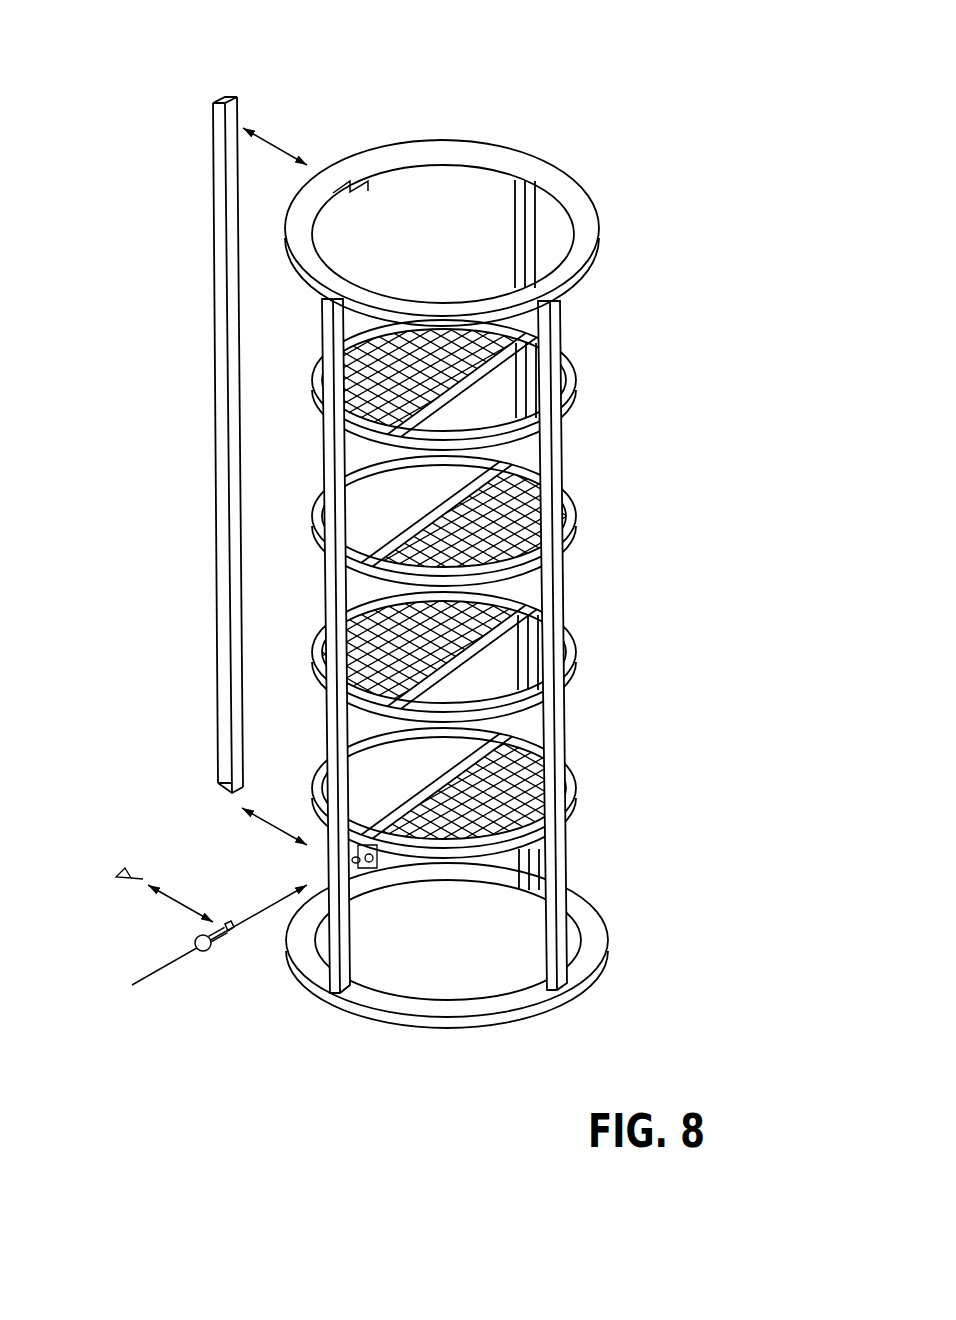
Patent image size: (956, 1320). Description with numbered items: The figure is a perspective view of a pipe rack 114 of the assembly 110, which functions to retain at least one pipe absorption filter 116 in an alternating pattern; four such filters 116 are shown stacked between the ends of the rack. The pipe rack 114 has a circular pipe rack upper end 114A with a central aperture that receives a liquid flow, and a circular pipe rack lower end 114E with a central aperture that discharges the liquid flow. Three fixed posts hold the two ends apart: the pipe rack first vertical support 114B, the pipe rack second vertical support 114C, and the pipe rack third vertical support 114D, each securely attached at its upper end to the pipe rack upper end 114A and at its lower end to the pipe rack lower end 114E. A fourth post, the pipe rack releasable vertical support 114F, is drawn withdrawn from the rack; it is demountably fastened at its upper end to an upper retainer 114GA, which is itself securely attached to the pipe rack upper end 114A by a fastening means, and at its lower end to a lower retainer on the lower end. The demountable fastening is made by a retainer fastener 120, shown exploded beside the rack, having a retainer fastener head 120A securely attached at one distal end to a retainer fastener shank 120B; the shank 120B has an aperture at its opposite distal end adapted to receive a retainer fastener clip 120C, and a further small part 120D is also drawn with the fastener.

The filter assembly 110 is at (360, 27).
The pipe rack 114 is at (583, 177).
The pipe rack upper end 114A is at (508, 148).
The pipe rack first vertical support 114B is at (325, 455).
The pipe rack second vertical support 114C is at (561, 314).
The pipe rack third vertical support 114D is at (517, 218).
The pipe rack lower end 114E is at (573, 992).
The pipe rack releasable vertical support 114F is at (215, 335).
The upper retainer 114GA is at (335, 192).
The pipe absorption filter 116 is at (567, 372).
The retainer fastener 120 is at (205, 957).
The retainer fastener head 120A is at (192, 952).
The retainer fastener shank 120B is at (212, 947).
The retainer fastener clip 120C is at (227, 925).
The wing nut 120D is at (122, 870).